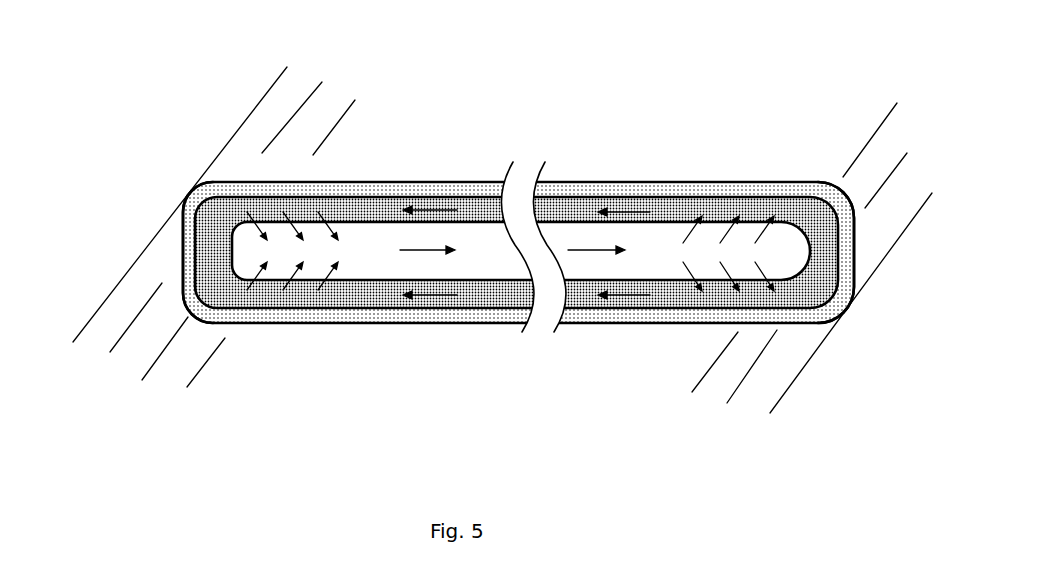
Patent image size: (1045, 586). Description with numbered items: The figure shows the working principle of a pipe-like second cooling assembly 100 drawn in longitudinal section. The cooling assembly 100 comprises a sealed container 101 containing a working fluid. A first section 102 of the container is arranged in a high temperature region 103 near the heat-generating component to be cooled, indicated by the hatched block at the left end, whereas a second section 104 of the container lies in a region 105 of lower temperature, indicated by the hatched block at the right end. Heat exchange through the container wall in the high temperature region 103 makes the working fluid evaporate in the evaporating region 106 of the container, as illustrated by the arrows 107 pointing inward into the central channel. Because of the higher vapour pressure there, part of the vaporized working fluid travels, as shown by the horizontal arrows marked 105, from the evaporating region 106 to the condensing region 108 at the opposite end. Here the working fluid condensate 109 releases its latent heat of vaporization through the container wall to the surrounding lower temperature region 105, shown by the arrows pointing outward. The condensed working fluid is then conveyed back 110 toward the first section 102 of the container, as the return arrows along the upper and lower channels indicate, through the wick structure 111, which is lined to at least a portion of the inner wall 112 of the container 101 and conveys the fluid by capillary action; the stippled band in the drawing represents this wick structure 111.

The second cooling assembly 100 is at (454, 113).
The sealed container 101 is at (340, 317).
The first section of the container 102 is at (208, 317).
The high temperature region 103 is at (260, 128).
The second section of the container 104 is at (828, 302).
The region of lower temperature 105 is at (425, 250).
The evaporating region 106 is at (210, 215).
The arrows illustrating evaporation 107 is at (288, 220).
The condensing region 108 is at (803, 213).
The working fluid condensate 109 is at (763, 245).
The return conveyance of condensed working fluid 110 is at (633, 295).
The wick structure 111 is at (587, 300).
The inner wall of the container 112 is at (383, 305).